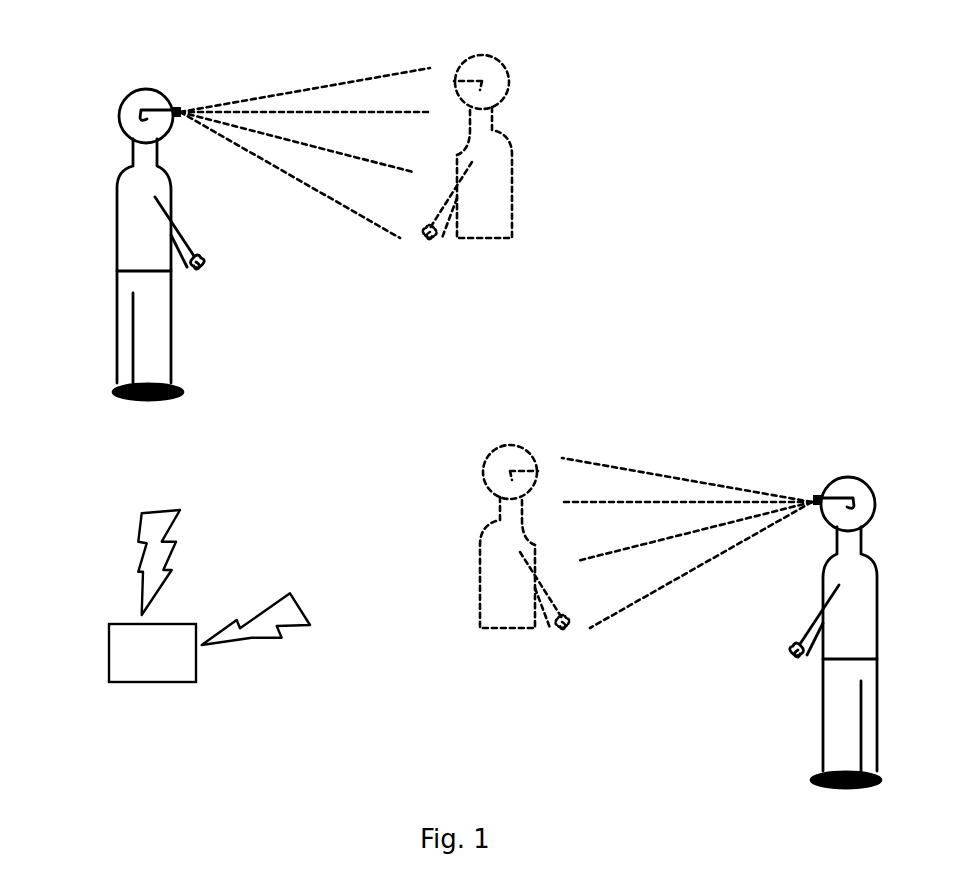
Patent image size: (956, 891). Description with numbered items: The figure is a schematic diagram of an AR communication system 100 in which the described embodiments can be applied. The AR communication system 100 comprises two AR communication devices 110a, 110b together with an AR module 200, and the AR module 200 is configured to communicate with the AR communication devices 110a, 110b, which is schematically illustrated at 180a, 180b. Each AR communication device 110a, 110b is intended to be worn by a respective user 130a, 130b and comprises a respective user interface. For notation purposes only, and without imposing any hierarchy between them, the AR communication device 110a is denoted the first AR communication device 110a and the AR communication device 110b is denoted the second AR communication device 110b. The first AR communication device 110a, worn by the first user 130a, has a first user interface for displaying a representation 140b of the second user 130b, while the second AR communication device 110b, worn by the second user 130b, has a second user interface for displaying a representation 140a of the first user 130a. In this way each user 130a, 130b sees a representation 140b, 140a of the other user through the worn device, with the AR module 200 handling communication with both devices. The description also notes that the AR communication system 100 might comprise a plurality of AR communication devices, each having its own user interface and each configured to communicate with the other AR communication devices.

The AR communication system 100 is at (715, 160).
The first AR communication device 110a is at (179, 107).
The second AR communication device 110b is at (816, 496).
The first user 130a is at (172, 338).
The second user 130b is at (820, 732).
The representation of the first user 140a is at (495, 583).
The representation of the second user 140b is at (497, 190).
The communication (between AR module and first AR communication device) 180a is at (140, 568).
The communication (between AR module and second AR communication device) 180b is at (273, 638).
The AR module 200 is at (175, 666).